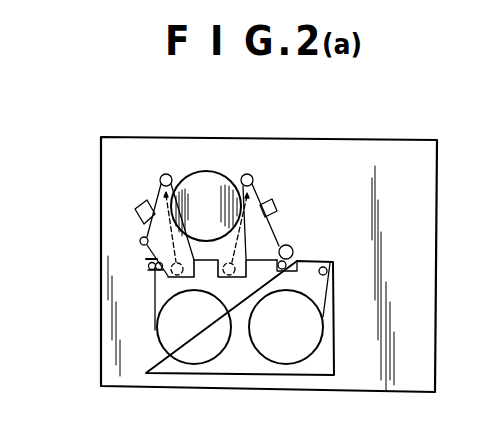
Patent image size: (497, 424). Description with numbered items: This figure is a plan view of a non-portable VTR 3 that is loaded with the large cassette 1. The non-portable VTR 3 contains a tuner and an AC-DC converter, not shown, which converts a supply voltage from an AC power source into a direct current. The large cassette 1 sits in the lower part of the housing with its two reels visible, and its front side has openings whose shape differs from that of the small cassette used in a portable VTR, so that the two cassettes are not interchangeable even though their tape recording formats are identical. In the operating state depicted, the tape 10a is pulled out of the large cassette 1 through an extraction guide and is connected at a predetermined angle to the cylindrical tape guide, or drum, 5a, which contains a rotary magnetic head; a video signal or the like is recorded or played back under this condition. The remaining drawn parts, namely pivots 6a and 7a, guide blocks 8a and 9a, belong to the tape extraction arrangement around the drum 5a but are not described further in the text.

The large cassette 1 is at (331, 351).
The non-portable VTR 3 is at (182, 137).
The cylindrical tape guide (drum) 5a is at (215, 171).
The pivot shaft of left arm 6a is at (163, 176).
The pivot shaft of right arm 7a is at (250, 174).
The tape guide block 8a is at (135, 210).
The tape guide block 9a is at (273, 203).
The tape 10a is at (290, 245).